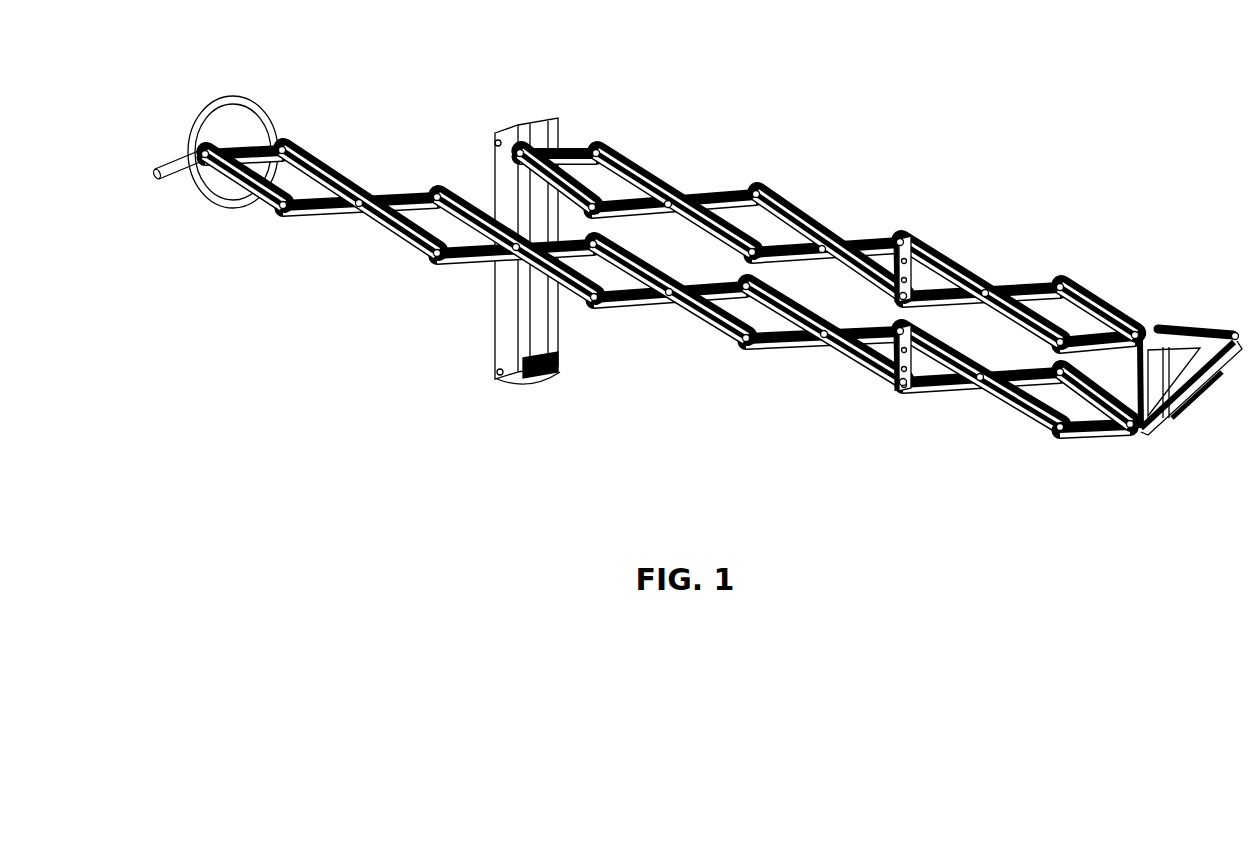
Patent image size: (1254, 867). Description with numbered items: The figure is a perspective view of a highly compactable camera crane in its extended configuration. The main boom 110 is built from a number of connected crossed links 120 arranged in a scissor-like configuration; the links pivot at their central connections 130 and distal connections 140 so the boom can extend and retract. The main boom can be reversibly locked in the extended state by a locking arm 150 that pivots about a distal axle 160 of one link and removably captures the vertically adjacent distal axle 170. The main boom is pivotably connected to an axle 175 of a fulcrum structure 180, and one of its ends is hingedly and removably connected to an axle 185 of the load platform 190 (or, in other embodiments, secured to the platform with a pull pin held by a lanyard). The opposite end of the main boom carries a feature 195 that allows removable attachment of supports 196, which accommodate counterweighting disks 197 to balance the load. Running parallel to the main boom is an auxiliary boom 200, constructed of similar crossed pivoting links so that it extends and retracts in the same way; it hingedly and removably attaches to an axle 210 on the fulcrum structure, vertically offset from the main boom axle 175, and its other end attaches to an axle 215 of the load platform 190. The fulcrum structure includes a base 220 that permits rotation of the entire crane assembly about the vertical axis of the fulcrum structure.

The main boom 110 is at (670, 337).
The crossed links 120 is at (705, 325).
The central connection 130 is at (667, 294).
The distal connection 140 is at (743, 345).
The locking arm 150 is at (925, 380).
The distal axle 160 is at (853, 360).
The vertically adjacent distal axle 170 is at (896, 386).
The axle of fulcrum structure 175 is at (500, 254).
The fulcrum structure 180 is at (526, 401).
The axle of load platform 185 is at (1125, 432).
The load platform 190 is at (1196, 354).
The feature 195 is at (193, 112).
The supports 196 is at (173, 167).
The counterweighting disks 197 is at (240, 118).
The auxiliary boom 200 is at (737, 168).
The axle on fulcrum structure 210 is at (496, 244).
The axle of load platform 215 is at (1143, 312).
The base 220 is at (563, 368).